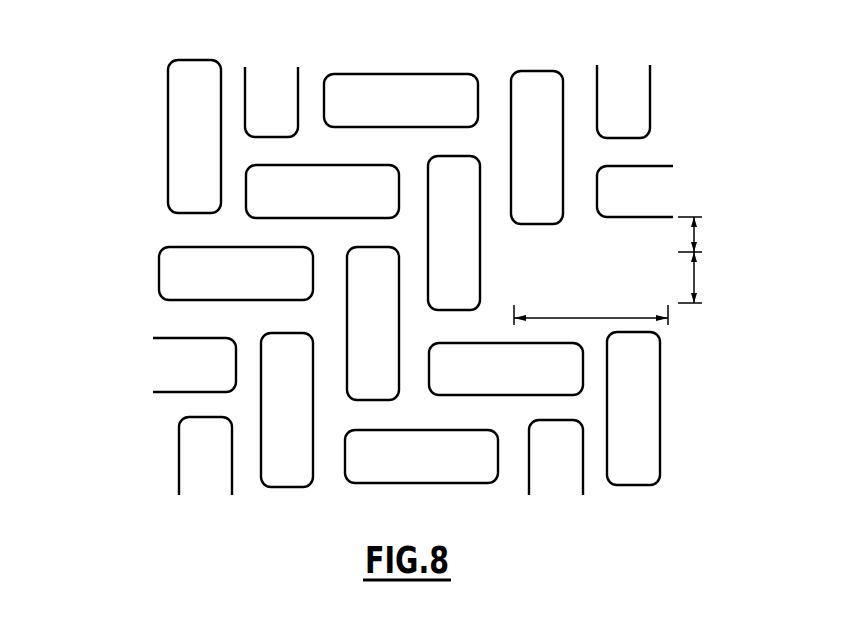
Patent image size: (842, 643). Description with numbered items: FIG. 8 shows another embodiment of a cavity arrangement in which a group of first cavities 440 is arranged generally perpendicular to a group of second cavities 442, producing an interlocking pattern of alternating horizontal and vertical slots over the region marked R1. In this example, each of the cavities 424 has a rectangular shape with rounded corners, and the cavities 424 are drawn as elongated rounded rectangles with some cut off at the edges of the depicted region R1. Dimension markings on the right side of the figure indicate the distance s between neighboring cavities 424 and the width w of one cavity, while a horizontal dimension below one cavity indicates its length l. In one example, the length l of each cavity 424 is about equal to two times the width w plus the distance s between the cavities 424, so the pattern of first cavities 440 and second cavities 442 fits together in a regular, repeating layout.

The region of herringbone pattern R1 is at (117, 62).
The cavities 424 is at (355, 85).
The first cavities 440 is at (418, 85).
The second cavities 442 is at (537, 88).
The distance between cavities S is at (697, 230).
The width W is at (695, 275).
The length l is at (581, 320).